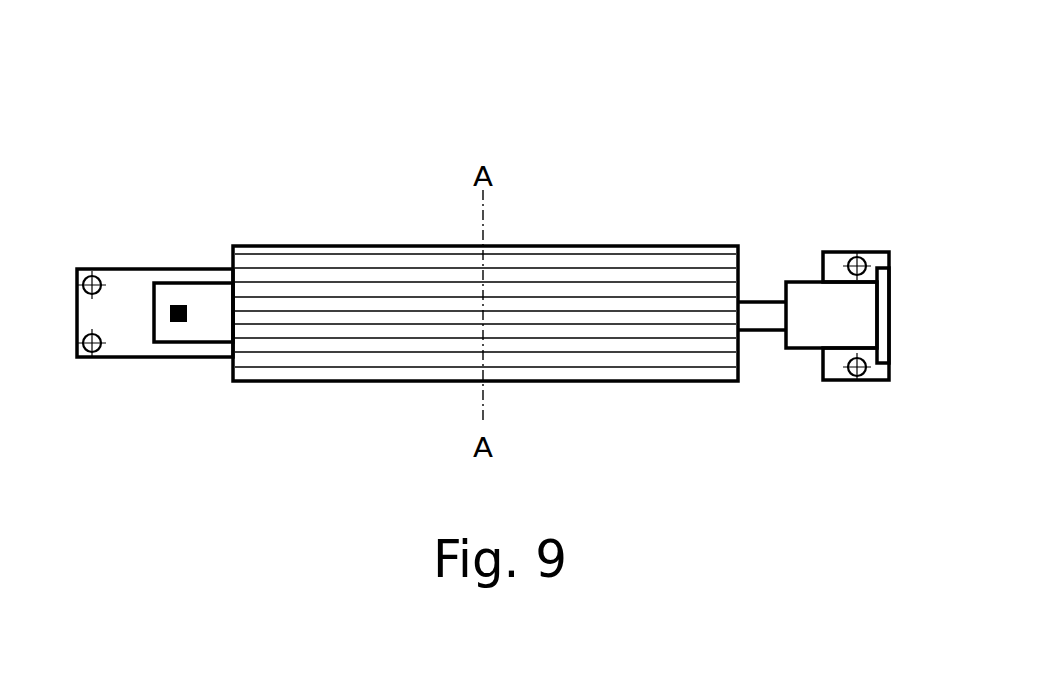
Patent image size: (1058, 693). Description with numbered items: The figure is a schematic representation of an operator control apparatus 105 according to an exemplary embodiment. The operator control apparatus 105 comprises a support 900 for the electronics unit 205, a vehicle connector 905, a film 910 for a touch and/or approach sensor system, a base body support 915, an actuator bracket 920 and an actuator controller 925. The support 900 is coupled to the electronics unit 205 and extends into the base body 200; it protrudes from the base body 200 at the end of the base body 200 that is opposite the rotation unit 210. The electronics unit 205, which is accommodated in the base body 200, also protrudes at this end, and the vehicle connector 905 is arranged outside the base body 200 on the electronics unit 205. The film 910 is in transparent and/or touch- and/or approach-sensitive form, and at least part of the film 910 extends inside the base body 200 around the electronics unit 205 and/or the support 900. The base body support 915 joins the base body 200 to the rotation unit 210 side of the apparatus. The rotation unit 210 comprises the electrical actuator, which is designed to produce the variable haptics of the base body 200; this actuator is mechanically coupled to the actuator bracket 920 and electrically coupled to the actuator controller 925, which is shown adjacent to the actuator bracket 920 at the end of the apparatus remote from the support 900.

The operator control apparatus 105 is at (146, 92).
The support 900 is at (125, 290).
The electronics unit 205 is at (185, 297).
The vehicle connector 905 is at (177, 322).
The base body 200 is at (575, 245).
The film 910 is at (378, 273).
The base body support 915 is at (765, 322).
The rotation unit 210 is at (798, 297).
The actuator bracket 920 is at (878, 258).
The actuator controller 925 is at (885, 315).